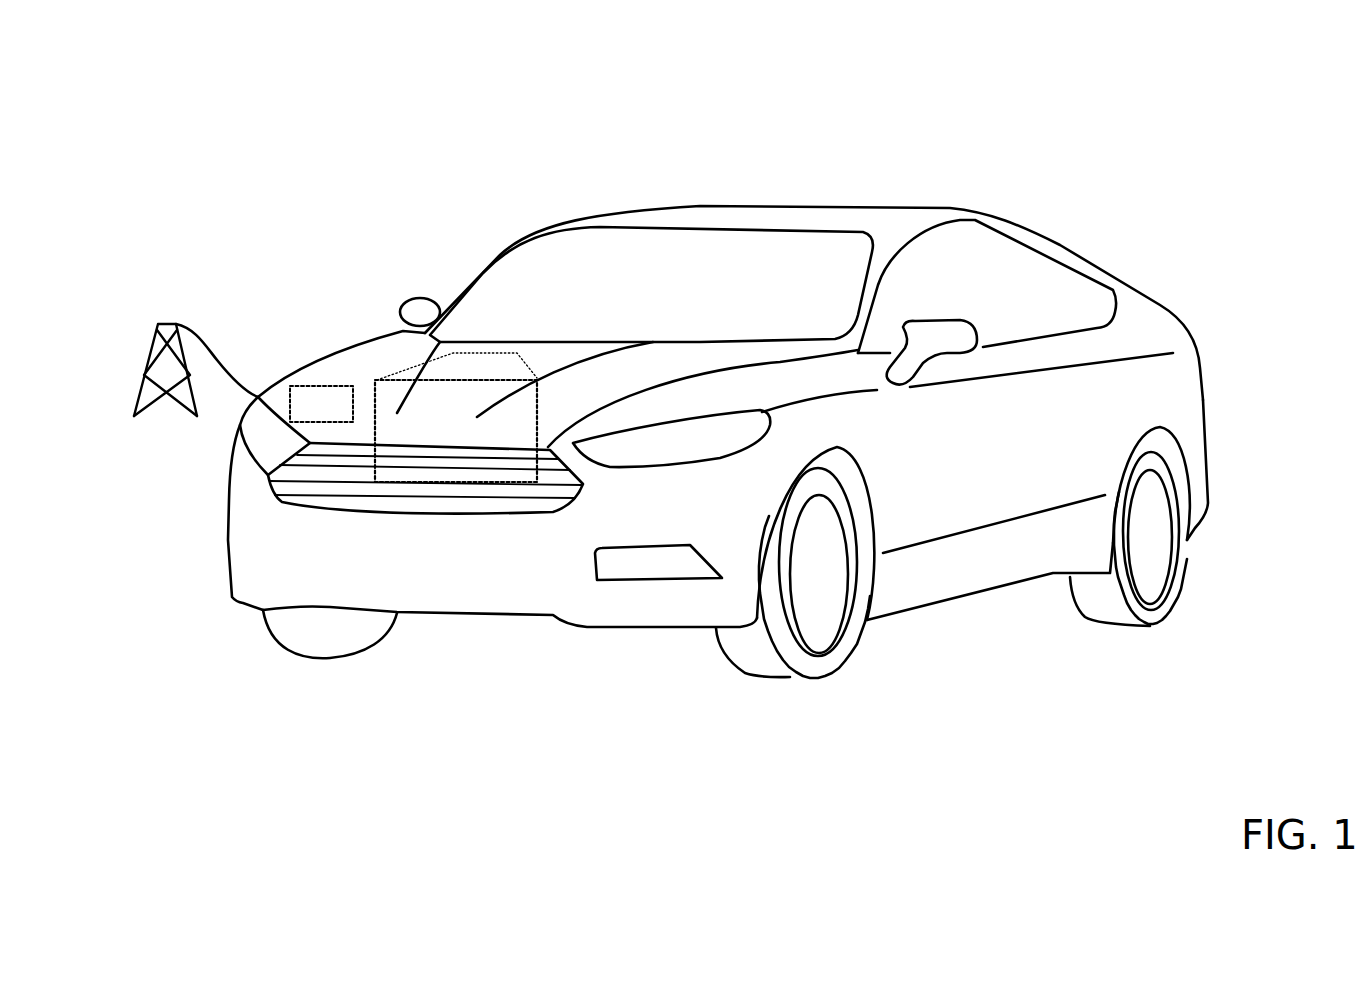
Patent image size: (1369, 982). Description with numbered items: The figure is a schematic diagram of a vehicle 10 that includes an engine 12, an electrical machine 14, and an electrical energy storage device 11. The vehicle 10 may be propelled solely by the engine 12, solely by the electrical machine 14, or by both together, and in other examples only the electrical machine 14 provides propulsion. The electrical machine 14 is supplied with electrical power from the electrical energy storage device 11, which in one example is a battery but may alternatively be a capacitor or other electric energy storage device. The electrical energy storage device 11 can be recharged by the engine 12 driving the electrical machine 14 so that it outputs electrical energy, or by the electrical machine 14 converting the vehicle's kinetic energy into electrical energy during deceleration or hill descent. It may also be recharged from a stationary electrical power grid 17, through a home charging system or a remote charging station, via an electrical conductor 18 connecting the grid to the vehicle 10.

The vehicle 10 is at (156, 80).
The electrical energy storage device 11 is at (260, 398).
The engine 12 is at (466, 441).
The electrical machine 14 is at (522, 352).
The stationary electrical power grid 17 is at (157, 334).
The electrical conductor 18 is at (218, 359).